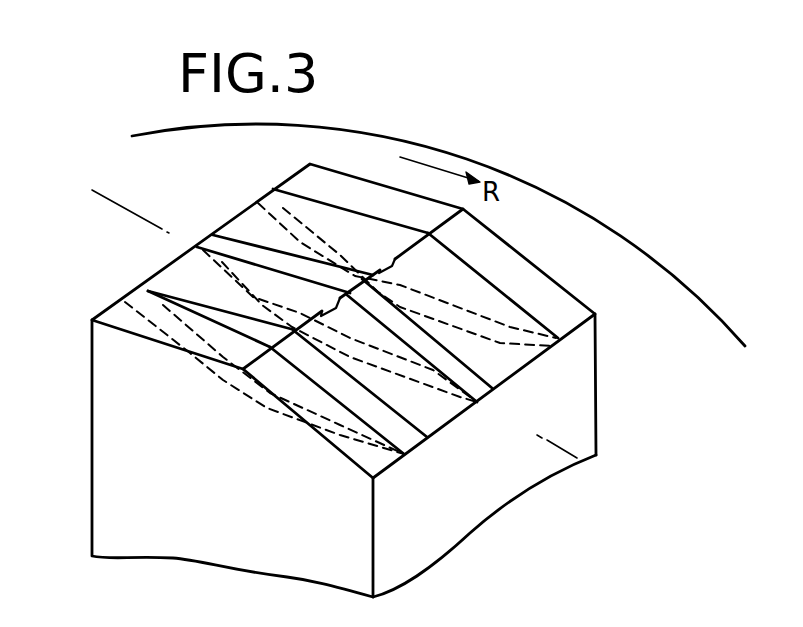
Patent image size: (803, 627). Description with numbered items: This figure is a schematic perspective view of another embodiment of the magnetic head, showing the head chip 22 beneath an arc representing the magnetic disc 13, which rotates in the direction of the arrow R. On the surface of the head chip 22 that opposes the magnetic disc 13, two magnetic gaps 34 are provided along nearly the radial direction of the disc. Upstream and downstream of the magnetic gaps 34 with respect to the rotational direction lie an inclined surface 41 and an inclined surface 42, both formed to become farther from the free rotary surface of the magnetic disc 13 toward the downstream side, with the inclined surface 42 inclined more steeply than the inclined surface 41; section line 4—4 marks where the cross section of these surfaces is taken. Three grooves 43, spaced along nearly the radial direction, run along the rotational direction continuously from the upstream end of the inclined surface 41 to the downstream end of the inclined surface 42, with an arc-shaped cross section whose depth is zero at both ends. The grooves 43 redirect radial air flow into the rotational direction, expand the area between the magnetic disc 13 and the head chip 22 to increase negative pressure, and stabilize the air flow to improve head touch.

The section line 4— 4 is at (100, 199).
The magnetic disc 13 is at (412, 142).
The head chip 22 is at (117, 490).
The magnetic gap 34 is at (393, 268).
The inclined surface 41 is at (198, 289).
The inclined surface 42 is at (488, 351).
The groove 43 is at (345, 215).